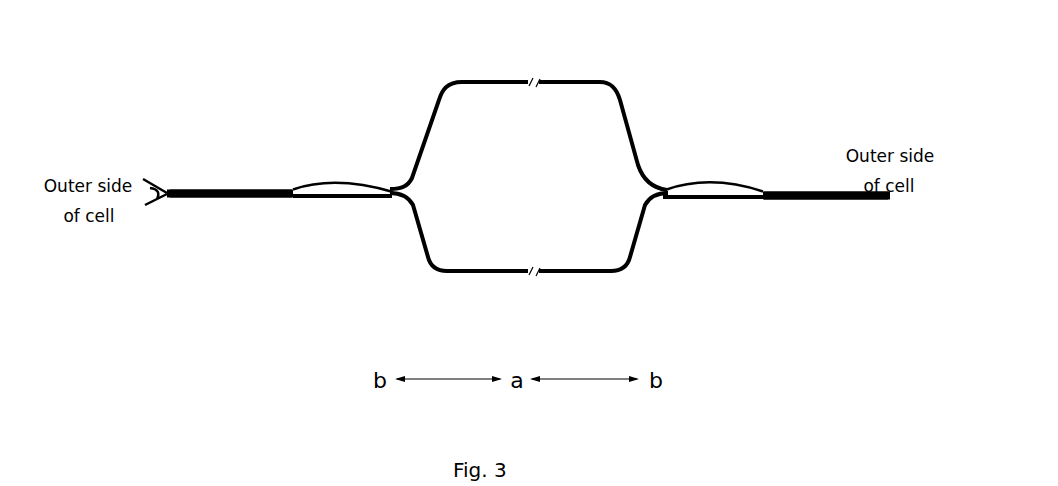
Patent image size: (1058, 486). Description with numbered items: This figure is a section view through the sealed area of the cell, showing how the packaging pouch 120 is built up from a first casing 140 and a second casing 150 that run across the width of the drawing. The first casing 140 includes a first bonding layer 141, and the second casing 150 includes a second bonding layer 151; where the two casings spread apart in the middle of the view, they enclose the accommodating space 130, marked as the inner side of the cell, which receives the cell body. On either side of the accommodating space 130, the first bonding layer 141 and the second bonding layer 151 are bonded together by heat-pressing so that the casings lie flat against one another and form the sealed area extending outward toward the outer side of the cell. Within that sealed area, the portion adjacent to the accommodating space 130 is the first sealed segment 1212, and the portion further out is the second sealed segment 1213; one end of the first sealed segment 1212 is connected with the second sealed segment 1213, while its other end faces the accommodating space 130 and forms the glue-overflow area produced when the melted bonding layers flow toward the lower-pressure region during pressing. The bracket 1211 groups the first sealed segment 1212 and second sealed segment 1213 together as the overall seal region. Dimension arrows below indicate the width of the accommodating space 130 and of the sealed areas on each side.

The packaging pouch 120 is at (242, 111).
The accommodating space 130 is at (539, 152).
The first casing 140 is at (559, 79).
The first bonding layer 141 is at (342, 178).
The second casing 150 is at (573, 274).
The second bonding layer 151 is at (362, 200).
The sealing portion 1211 is at (758, 264).
The first sealed segment 1212 is at (340, 199).
The second sealed segment 1213 is at (243, 200).